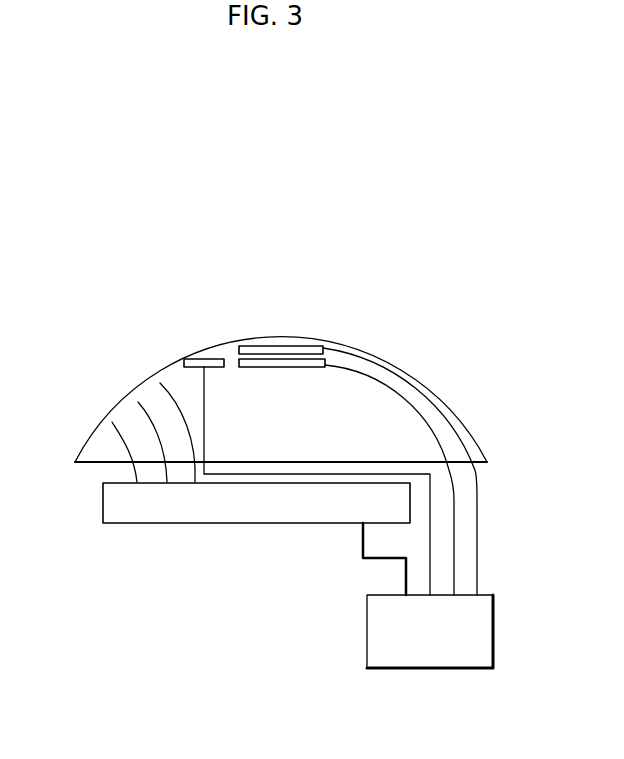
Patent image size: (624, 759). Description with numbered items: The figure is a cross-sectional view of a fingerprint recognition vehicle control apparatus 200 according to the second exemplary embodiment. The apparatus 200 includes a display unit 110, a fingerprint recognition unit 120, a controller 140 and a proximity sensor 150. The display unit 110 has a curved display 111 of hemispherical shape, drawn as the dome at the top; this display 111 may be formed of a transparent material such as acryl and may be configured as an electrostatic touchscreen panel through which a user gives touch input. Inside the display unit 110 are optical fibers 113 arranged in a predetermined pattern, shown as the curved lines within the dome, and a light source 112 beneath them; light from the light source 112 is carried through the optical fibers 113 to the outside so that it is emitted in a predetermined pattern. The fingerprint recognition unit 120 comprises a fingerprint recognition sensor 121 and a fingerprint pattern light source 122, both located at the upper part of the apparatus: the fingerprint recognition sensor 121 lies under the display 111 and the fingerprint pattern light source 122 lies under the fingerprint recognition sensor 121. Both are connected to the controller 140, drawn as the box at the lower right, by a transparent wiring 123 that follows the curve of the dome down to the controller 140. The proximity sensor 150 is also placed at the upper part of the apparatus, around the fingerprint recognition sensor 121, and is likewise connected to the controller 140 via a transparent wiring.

The display apparatus 200 is at (41, 255).
The display unit 110 is at (44, 371).
The curved display 111 is at (147, 393).
The light source 112 is at (103, 498).
The optical fibers 113 is at (126, 441).
The proximity sensor 150 is at (204, 359).
The fingerprint recognition unit 120 is at (410, 300).
The fingerprint recognition sensor 121 is at (289, 346).
The fingerprint pattern light source 122 is at (312, 355).
The transparent wiring 123 is at (383, 383).
The controller 140 is at (493, 632).